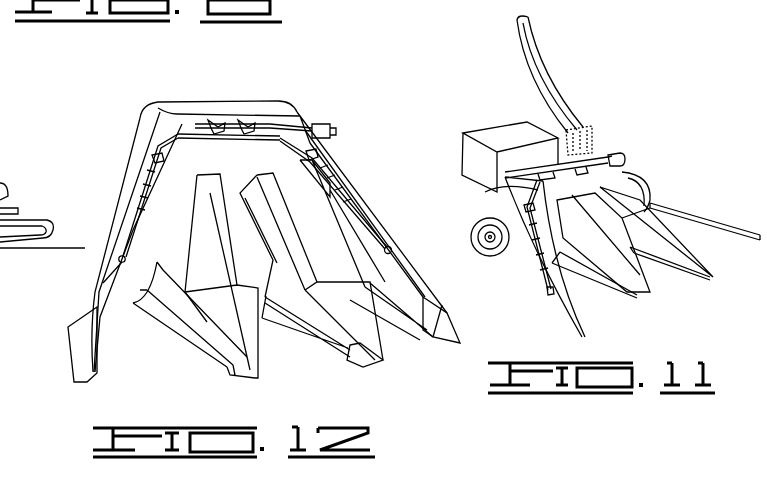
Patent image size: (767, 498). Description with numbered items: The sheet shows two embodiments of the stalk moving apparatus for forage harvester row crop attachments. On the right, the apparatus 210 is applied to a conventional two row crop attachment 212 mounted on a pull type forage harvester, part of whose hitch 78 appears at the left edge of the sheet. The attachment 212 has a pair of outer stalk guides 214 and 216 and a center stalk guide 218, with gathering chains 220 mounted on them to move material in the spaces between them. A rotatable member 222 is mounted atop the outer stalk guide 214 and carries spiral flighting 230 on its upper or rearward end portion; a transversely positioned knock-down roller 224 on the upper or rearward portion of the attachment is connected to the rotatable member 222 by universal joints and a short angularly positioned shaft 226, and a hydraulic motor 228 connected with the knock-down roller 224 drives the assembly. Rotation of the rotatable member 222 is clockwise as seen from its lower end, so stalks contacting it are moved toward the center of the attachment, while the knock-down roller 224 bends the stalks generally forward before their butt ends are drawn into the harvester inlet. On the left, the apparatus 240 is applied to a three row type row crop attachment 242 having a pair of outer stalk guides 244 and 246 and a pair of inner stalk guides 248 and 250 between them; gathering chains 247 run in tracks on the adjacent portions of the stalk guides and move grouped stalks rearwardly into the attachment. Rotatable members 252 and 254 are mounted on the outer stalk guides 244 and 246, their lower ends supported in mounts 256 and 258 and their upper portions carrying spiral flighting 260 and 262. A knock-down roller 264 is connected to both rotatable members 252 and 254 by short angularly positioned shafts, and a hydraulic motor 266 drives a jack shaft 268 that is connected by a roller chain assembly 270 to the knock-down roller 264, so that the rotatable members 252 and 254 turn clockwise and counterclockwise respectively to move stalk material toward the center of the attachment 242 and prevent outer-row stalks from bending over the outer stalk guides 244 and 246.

In FIG. 12, the tractor hitch 78 is at (45, 217).
In FIG. 12, the stalk moving apparatus 240 is at (342, 148).
In FIG. 12, the three row type row crop attachment 242 is at (164, 102).
In FIG. 12, the outer stalk guide 244 is at (107, 298).
In FIG. 12, the outer stalk guide 246 is at (442, 320).
In FIG. 12, the gathering chains 247 is at (140, 320).
In FIG. 12, the inner stalk guide 248 is at (243, 378).
In FIG. 12, the inner stalk guide 250 is at (360, 367).
In FIG. 12, the rotatable member 252 is at (133, 223).
In FIG. 12, the rotatable member 254 is at (365, 215).
In FIG. 12, the mount 256 is at (117, 258).
In FIG. 12, the mount 258 is at (392, 248).
In FIG. 12, the spiral flighting 260 is at (148, 178).
In FIG. 12, the spiral flighting 262 is at (332, 162).
In FIG. 12, the knock-down roller 264 is at (257, 138).
In FIG. 12, the hydraulic motor 266 is at (328, 126).
In FIG. 12, the jack shaft 268 is at (280, 128).
In FIG. 12, the connecting roller chain assembly 270 is at (230, 124).
In FIG. 11, the stalk moving apparatus 210 is at (622, 145).
In FIG. 11, the two row crop attachment 212 is at (597, 160).
In FIG. 11, the outer stalk guide 214 is at (560, 307).
In FIG. 11, the outer stalk guide 216 is at (658, 230).
In FIG. 11, the center stalk guide 218 is at (630, 277).
In FIG. 11, the gathering chains 220 is at (597, 287).
In FIG. 11, the rotatable member 222 is at (540, 267).
In FIG. 11, the knock-down roller 224 is at (565, 160).
In FIG. 11, the short angularly positioned shaft 226 is at (500, 190).
In FIG. 11, the hydraulic motor 228 is at (627, 161).
In FIG. 11, the spiral flighting 230 is at (540, 230).